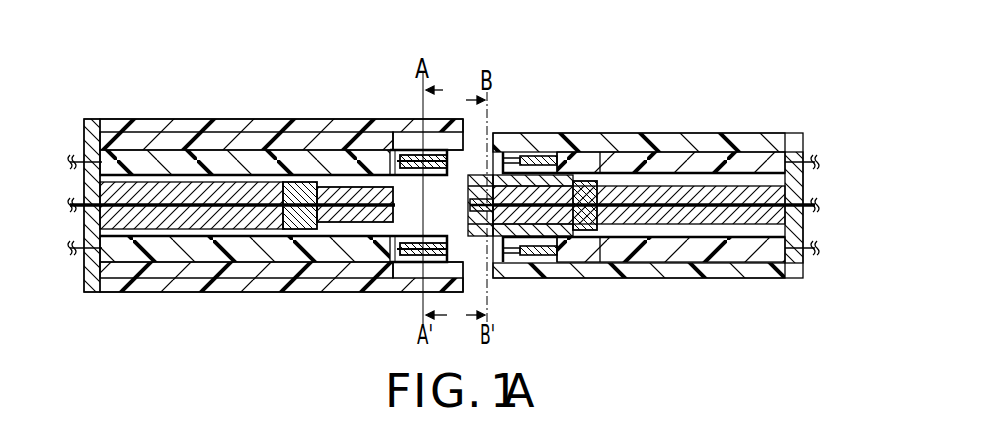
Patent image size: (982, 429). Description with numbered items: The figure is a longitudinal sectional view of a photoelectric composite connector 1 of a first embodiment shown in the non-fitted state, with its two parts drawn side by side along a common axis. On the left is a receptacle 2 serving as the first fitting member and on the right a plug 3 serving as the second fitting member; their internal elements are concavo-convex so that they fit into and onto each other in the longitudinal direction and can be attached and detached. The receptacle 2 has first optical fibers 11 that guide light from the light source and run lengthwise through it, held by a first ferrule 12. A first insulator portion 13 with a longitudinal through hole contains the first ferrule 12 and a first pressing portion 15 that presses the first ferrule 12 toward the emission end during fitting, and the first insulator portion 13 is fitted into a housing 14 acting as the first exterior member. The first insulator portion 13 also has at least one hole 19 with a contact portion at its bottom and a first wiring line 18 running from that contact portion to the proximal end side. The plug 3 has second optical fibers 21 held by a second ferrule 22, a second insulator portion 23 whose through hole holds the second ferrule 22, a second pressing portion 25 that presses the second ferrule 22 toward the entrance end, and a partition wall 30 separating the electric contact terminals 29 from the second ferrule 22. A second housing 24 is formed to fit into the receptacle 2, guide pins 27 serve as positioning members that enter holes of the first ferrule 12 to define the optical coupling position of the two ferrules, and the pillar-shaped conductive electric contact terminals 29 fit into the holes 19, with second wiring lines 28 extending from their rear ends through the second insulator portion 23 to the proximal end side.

The photoelectric composite connector 1 is at (447, 48).
The receptacle 2 is at (288, 72).
The plug 3 is at (607, 72).
The first optical fibers 11 is at (114, 270).
The first ferrule 12 is at (335, 180).
The first insulator portion 13 is at (260, 156).
The housing 14 is at (201, 138).
The first pressing portion 15 is at (147, 186).
The first wiring line 18 is at (370, 162).
The hole 19 is at (410, 157).
The second optical fibers 21 is at (797, 268).
The second ferrule 22 is at (588, 188).
The second insulator portion 23 is at (562, 158).
The second housing 24 is at (636, 142).
The second pressing portion 25 is at (673, 190).
The guide pins 27 is at (477, 216).
The second wiring lines 28 is at (739, 160).
The electric contact terminals 29 is at (531, 162).
The partition wall 30 is at (483, 185).